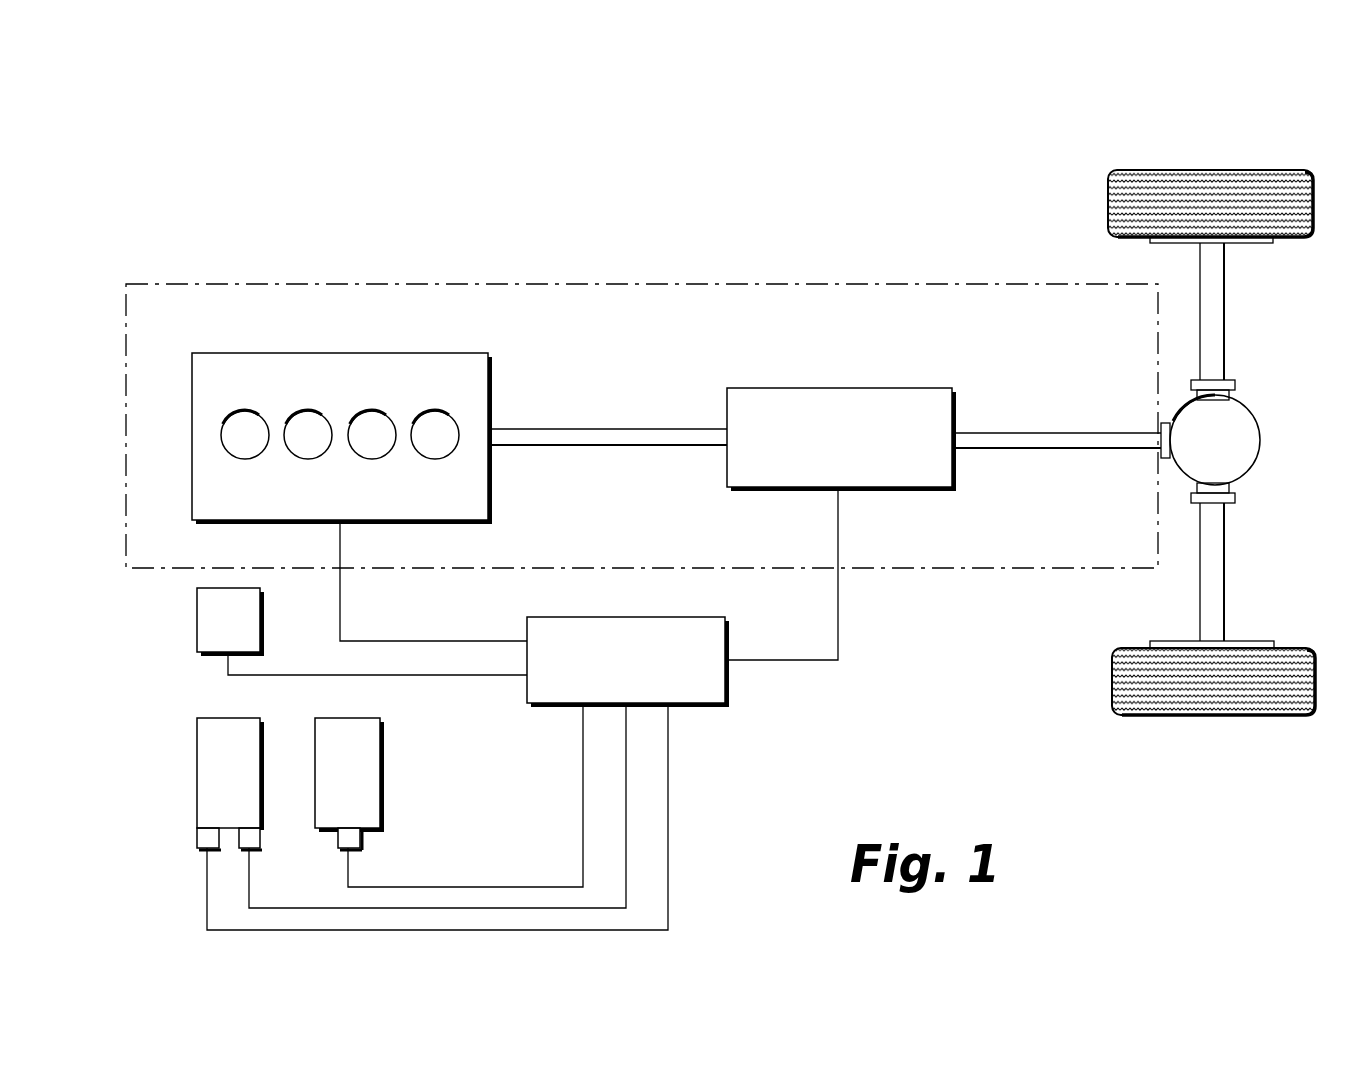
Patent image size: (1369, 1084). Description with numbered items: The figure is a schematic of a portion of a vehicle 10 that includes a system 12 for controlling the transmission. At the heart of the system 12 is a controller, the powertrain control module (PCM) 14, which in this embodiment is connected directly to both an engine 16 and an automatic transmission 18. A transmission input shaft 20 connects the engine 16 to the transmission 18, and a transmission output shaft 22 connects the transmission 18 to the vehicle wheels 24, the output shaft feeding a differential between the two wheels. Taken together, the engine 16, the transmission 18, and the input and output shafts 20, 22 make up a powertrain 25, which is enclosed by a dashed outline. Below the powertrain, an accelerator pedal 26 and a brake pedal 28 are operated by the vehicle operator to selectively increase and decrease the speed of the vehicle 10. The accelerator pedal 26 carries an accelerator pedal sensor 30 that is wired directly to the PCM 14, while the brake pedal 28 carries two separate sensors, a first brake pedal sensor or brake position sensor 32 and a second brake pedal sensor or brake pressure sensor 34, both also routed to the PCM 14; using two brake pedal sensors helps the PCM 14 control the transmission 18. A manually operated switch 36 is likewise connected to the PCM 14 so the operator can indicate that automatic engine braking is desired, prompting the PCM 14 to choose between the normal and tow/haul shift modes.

The vehicle 10 is at (372, 168).
The system 12 is at (795, 745).
The powertrain control module (PCM) 14 is at (686, 708).
The engine 16 is at (241, 352).
The automatic transmission 18 is at (861, 387).
The transmission input shaft 20 is at (617, 426).
The transmission output shaft 22 is at (1010, 430).
The vehicle wheels 24 is at (1288, 167).
The powertrain 25 is at (655, 281).
The accelerator pedal 26 is at (384, 771).
The brake pedal 28 is at (197, 760).
The accelerator pedal sensor 30 is at (364, 838).
The brake position sensor 32 is at (197, 836).
The brake pressure sensor 34 is at (264, 836).
The manually operated switch 36 is at (197, 622).